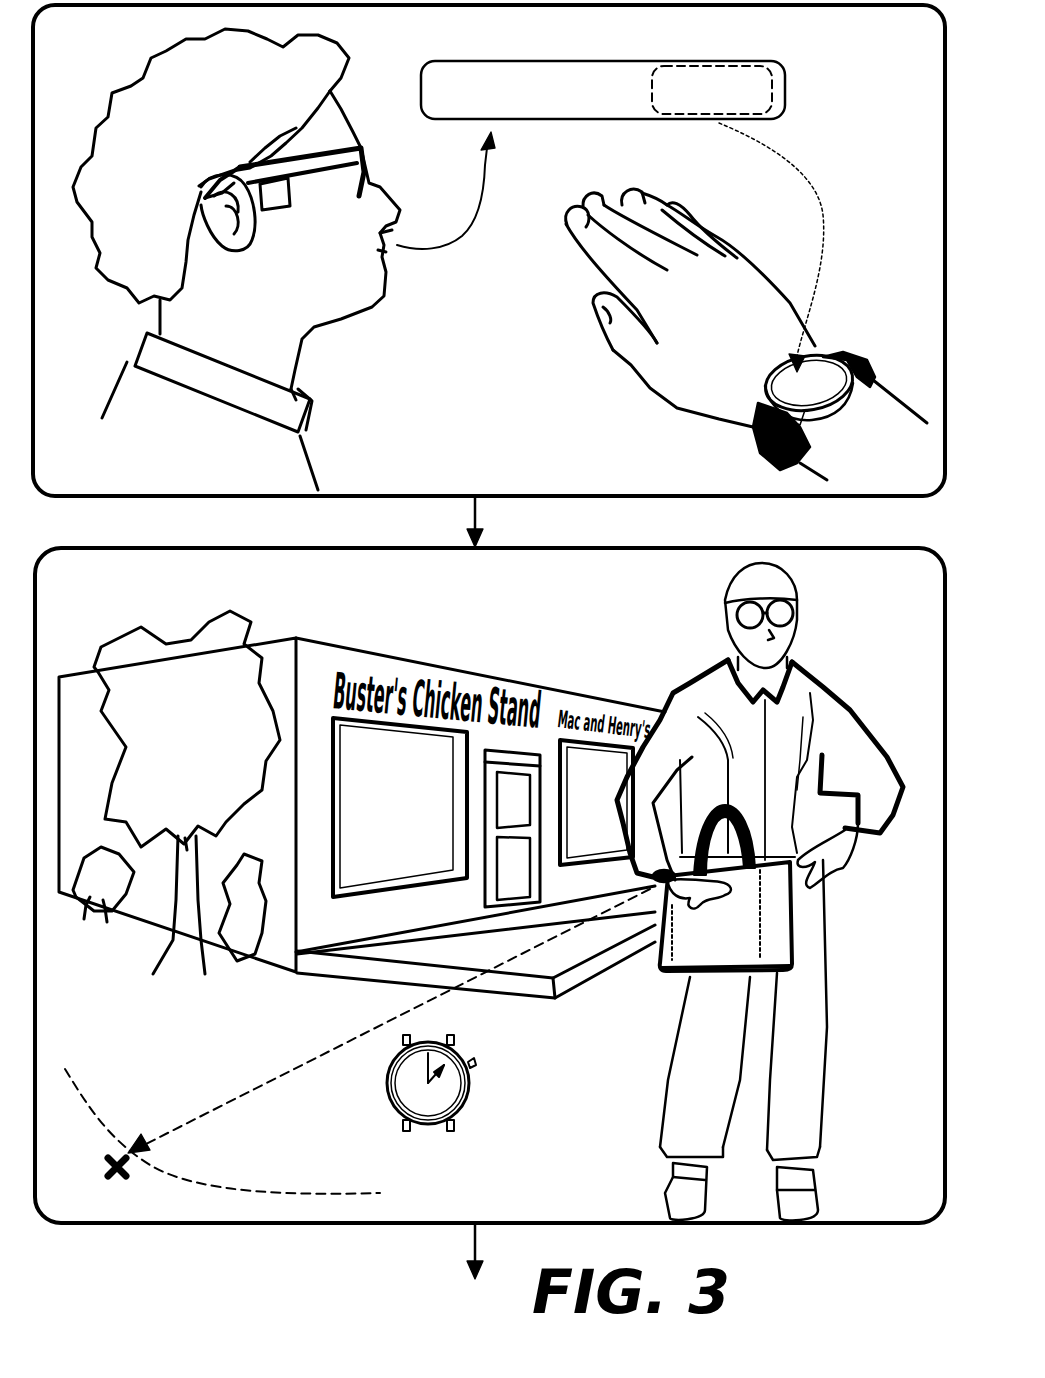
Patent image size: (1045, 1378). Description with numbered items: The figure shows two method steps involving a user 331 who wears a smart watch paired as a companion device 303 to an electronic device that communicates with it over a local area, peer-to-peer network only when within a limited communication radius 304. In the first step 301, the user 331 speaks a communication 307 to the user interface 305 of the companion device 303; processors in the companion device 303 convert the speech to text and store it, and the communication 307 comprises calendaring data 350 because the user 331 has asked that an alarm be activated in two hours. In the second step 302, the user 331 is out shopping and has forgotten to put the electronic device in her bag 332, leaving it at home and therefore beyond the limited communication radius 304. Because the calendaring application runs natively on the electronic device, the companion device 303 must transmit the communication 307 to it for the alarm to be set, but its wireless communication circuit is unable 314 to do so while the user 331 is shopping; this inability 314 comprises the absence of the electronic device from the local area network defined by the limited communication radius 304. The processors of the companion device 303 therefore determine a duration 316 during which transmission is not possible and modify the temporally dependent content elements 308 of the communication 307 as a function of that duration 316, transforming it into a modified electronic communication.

The step 301 is at (343, 499).
The step 302 is at (633, 547).
The companion device 303 is at (873, 367).
The limited communication radius 304 is at (268, 1085).
The user interface 305 is at (812, 376).
The communication 307 is at (788, 78).
The temporally dependent content elements 308 is at (770, 97).
The inability 314 is at (110, 1167).
The duration 316 is at (443, 1076).
The user 331 is at (310, 278).
The bag 332 is at (688, 955).
The calendaring data 350 is at (546, 82).